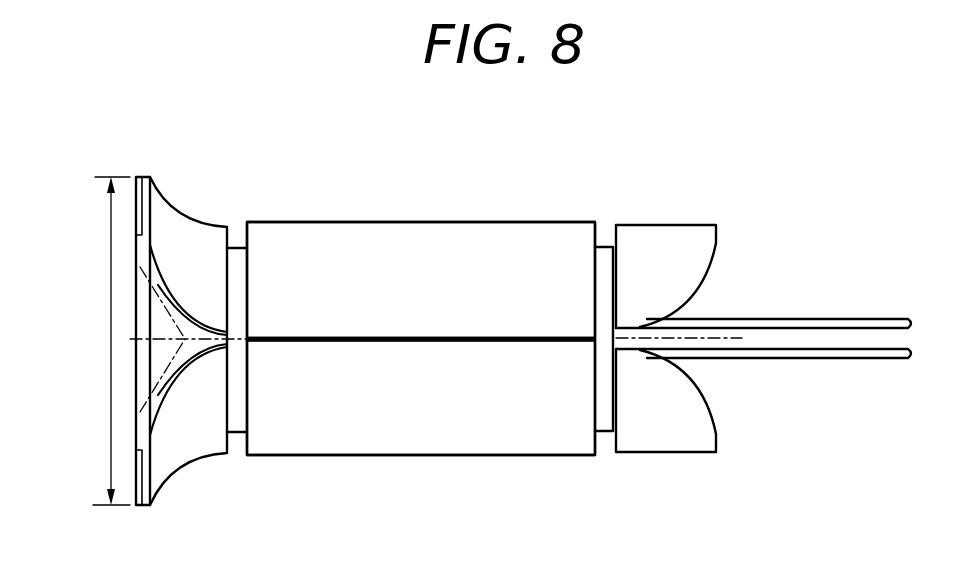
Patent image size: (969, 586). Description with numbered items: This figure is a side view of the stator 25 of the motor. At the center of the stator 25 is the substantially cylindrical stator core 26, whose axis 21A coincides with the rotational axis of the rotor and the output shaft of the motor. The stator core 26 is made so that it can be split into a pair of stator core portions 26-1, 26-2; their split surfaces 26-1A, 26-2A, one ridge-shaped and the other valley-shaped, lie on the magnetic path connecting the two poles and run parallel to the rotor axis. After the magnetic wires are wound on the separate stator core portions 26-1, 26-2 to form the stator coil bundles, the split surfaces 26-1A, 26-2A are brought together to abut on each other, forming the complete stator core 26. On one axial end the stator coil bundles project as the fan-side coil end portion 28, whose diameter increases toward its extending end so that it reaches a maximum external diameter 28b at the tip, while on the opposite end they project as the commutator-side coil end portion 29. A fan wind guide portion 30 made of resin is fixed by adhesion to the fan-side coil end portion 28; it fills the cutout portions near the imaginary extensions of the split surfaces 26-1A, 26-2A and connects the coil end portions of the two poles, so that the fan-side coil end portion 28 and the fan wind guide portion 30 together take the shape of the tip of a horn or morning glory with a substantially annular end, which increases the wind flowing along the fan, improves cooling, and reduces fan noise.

The stator 25 is at (727, 190).
The axis of stator core 21A is at (185, 339).
The stator core 26 is at (393, 425).
The stator core portion 26-1 is at (372, 255).
The stator core portion 26-2 is at (320, 425).
The split surface 26-1A is at (490, 340).
The split surface 26-2A is at (518, 337).
The fan-side coil end portion 28 is at (185, 420).
The maximum external diameter 28b is at (110, 318).
The commutator-side coil end portion 29 is at (658, 428).
The fan wind guide portion 30 is at (167, 300).